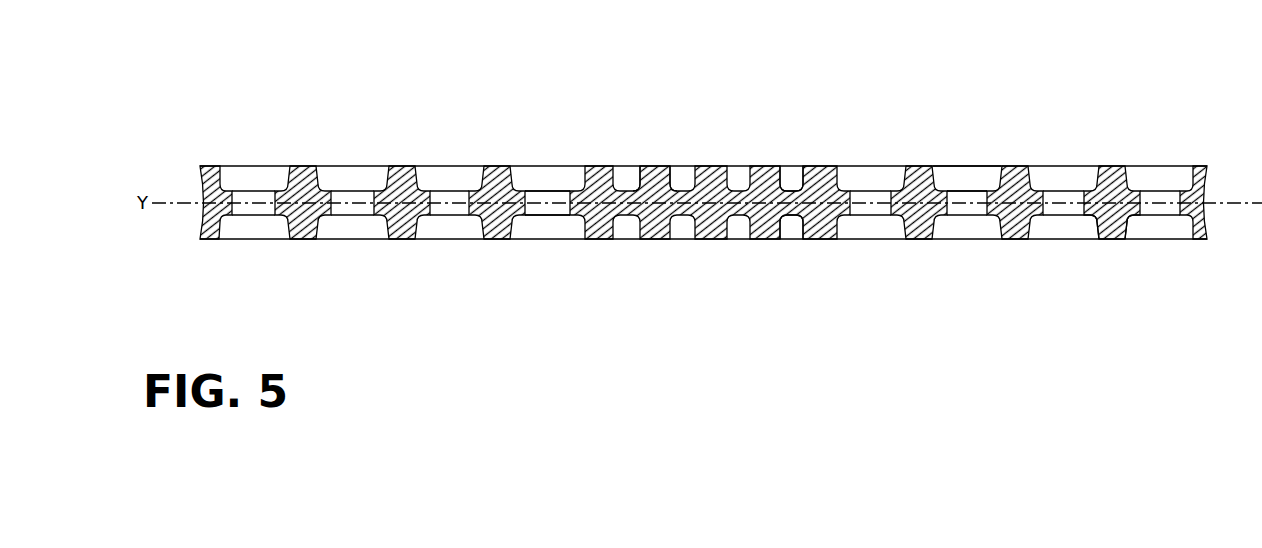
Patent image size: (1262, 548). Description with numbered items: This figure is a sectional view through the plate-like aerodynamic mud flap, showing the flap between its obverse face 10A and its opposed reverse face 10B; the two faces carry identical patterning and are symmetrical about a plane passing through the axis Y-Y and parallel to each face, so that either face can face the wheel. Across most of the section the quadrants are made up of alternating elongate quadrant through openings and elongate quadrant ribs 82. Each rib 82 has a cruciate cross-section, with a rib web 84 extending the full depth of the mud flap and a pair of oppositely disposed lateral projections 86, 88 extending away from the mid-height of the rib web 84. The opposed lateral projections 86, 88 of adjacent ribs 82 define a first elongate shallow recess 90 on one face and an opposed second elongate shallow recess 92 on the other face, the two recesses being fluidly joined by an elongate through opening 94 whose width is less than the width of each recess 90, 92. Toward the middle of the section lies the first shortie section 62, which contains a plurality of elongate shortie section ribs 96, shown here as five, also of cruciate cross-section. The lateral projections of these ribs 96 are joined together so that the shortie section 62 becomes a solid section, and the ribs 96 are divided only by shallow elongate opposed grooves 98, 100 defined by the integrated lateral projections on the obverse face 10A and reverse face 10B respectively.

The obverse face 10A is at (885, 166).
The reverse face 10B is at (860, 240).
The first shortie section 62 is at (714, 166).
The first elongate shallow recess 90 is at (557, 181).
The second elongate shallow recess 92 is at (560, 224).
The elongate through opening 94 is at (543, 208).
The shortie section ribs 96 is at (649, 177).
The shallow elongate groove 98 is at (793, 179).
The shallow elongate groove 100 is at (793, 223).
The elongate quadrant ribs 82 is at (1015, 186).
The rib web 84 is at (1107, 178).
The lateral projection 86 is at (1092, 220).
The lateral projection 88 is at (1133, 218).